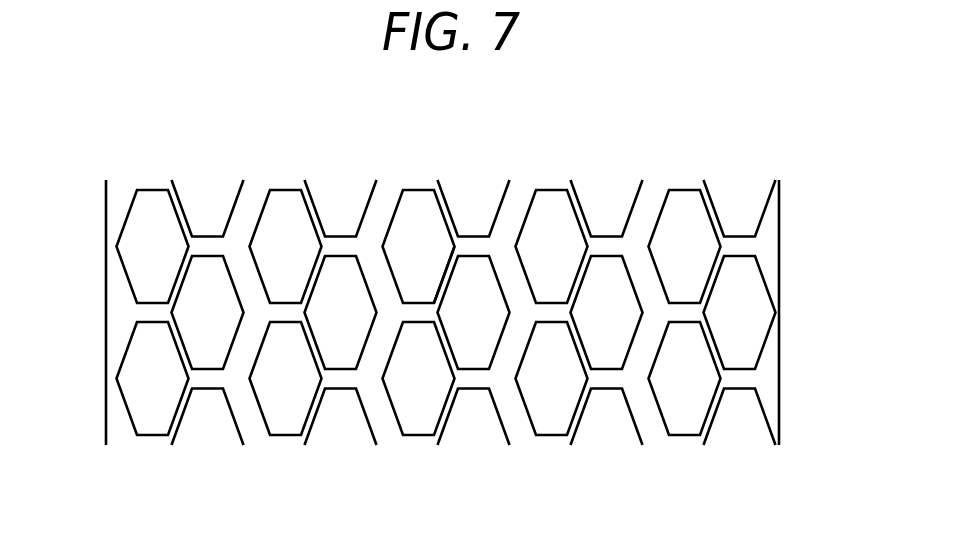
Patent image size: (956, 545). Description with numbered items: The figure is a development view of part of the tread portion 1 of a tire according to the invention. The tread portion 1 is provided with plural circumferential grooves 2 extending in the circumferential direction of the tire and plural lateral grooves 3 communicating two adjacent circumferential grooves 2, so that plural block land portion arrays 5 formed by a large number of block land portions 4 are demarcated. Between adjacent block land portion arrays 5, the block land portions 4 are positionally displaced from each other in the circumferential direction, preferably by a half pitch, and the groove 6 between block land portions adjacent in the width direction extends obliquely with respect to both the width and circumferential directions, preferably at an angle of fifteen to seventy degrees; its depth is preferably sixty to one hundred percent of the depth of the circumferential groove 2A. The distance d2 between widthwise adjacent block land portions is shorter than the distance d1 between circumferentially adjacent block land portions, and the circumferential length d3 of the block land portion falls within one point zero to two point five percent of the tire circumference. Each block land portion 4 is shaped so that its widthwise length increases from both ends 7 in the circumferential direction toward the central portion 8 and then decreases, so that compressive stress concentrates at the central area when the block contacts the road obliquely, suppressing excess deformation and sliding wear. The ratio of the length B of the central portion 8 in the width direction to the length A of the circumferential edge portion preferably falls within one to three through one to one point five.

The tread portion 1 is at (661, 162).
The circumferential groove 2 is at (437, 186).
The circumferential groove 2A is at (512, 203).
The lateral groove 3 is at (474, 245).
The block land portion 4 is at (408, 257).
The block land portion array 5 is at (417, 448).
The groove between block land portions adjacent in the width direction 6 is at (438, 305).
The end of the block land portion in the circumferential direction 7 is at (548, 190).
The central portion of the block land portion 8 is at (588, 247).
The length of the circumferential edge portion in the width direction A is at (458, 368).
The length of the central portion in the width direction B is at (508, 313).
The distance between circumferentially adjacent block land portions d1 is at (599, 405).
The distance between widthwise adjacent block land portions d2 is at (550, 407).
The length of the block land portion in the circumferential direction d3 is at (599, 256).